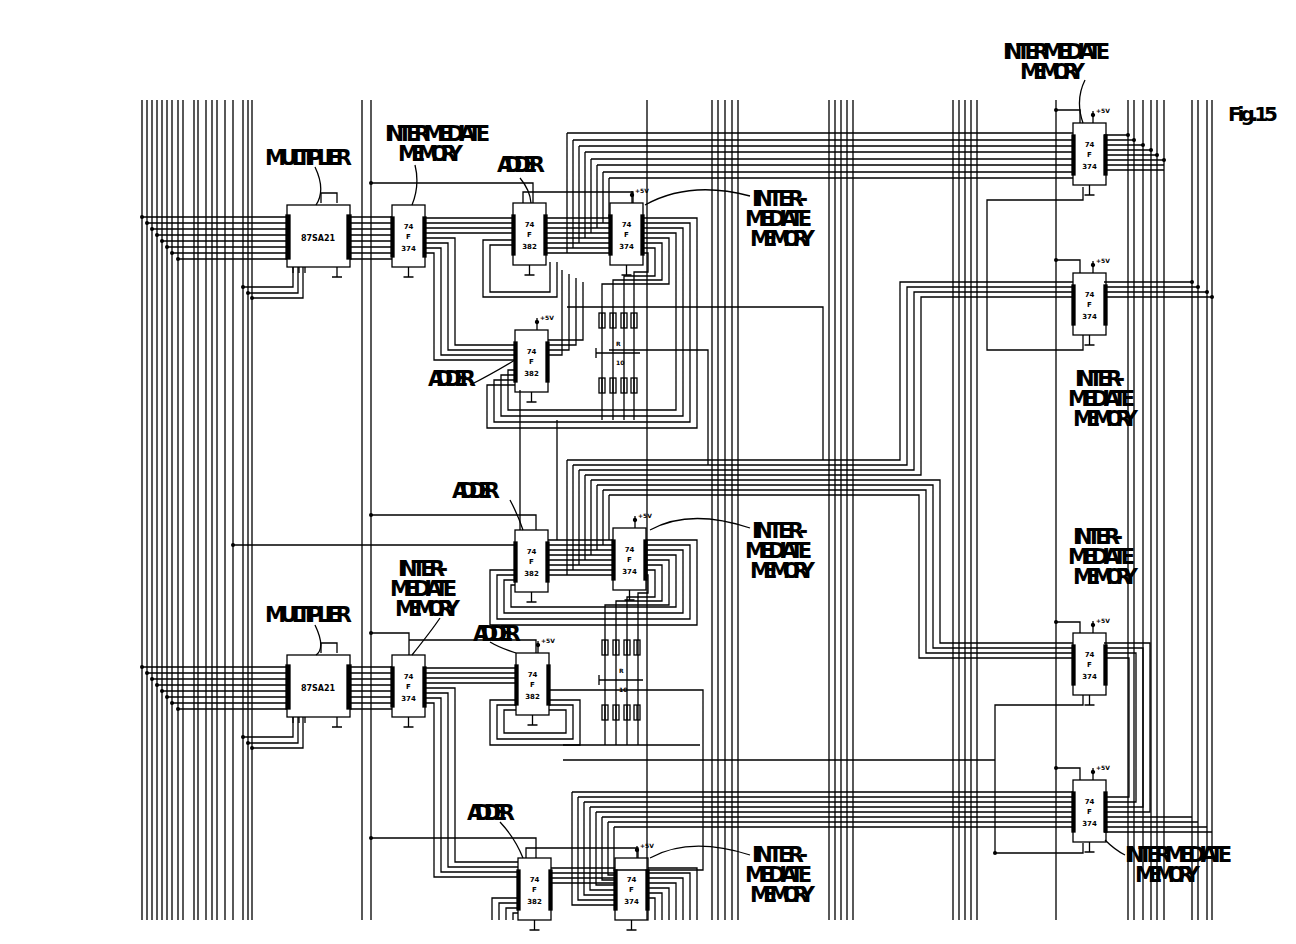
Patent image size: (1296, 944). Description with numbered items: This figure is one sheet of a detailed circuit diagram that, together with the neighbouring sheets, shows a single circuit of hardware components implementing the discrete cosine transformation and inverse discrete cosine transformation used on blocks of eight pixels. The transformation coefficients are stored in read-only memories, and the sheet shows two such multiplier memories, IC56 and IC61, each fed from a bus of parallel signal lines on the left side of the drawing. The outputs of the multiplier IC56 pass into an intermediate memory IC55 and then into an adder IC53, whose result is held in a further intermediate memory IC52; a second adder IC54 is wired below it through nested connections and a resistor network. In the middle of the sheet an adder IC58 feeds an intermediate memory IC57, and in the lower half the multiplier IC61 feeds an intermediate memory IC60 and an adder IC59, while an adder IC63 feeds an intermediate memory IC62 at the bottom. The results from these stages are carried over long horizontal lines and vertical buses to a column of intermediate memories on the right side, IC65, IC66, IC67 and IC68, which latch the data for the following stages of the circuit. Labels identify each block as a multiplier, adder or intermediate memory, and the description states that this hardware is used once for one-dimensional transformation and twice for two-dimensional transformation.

The intermediate memory latch IC52 is at (645, 231).
The adder IC53 is at (514, 236).
The adder IC54 is at (517, 358).
The intermediate memory latch IC55 is at (426, 237).
The multiplier IC56 is at (318, 229).
The intermediate memory latch IC57 is at (648, 556).
The adder IC58 is at (513, 559).
The adder IC59 is at (516, 681).
The intermediate memory latch IC60 is at (426, 687).
The multiplier IC61 is at (318, 682).
The intermediate memory latch IC62 is at (650, 886).
The adder IC63 is at (519, 892).
The intermediate memory latch IC65 is at (1100, 151).
The intermediate memory latch IC66 is at (1100, 300).
The intermediate memory latch IC67 is at (1101, 661).
The intermediate memory latch IC68 is at (1106, 808).